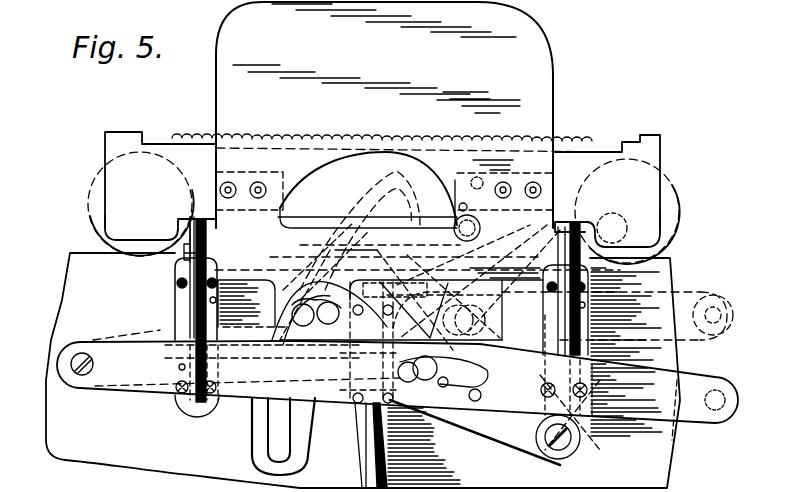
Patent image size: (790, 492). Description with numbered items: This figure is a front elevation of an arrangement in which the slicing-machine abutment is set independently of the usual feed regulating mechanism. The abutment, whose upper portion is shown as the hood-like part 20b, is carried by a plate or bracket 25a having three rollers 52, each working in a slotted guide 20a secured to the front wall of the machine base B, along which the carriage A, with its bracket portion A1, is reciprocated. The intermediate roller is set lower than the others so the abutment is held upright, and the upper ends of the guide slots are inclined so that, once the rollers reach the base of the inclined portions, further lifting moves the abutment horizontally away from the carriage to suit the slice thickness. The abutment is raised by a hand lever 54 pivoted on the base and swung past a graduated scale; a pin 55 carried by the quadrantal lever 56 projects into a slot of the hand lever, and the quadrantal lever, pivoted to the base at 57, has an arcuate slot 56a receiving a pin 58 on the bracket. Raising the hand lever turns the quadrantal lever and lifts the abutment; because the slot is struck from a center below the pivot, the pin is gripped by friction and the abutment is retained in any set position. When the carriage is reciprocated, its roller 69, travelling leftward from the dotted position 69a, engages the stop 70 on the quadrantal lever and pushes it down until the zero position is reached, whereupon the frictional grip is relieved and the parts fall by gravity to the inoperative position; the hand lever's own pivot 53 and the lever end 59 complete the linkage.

The hood 20b is at (396, 115).
The carriage A is at (105, 148).
The bracket lower portion A1 is at (100, 216).
The roller 69 is at (456, 222).
The dotted position of roller 69a is at (620, 217).
The plate or bracket 25a is at (417, 226).
The hand lever 53 is at (208, 253).
The pin 58 is at (286, 293).
The rollers 52 is at (403, 284).
The slotted guide 20a is at (176, 316).
The stop 70 is at (490, 322).
The pivot 54 is at (82, 375).
The pin 55 is at (428, 385).
The quadrantal lever 56 is at (262, 450).
The arcuate slot 56a is at (275, 418).
The pivot 57 is at (575, 450).
The pivot 59 is at (680, 402).
The base B is at (668, 465).